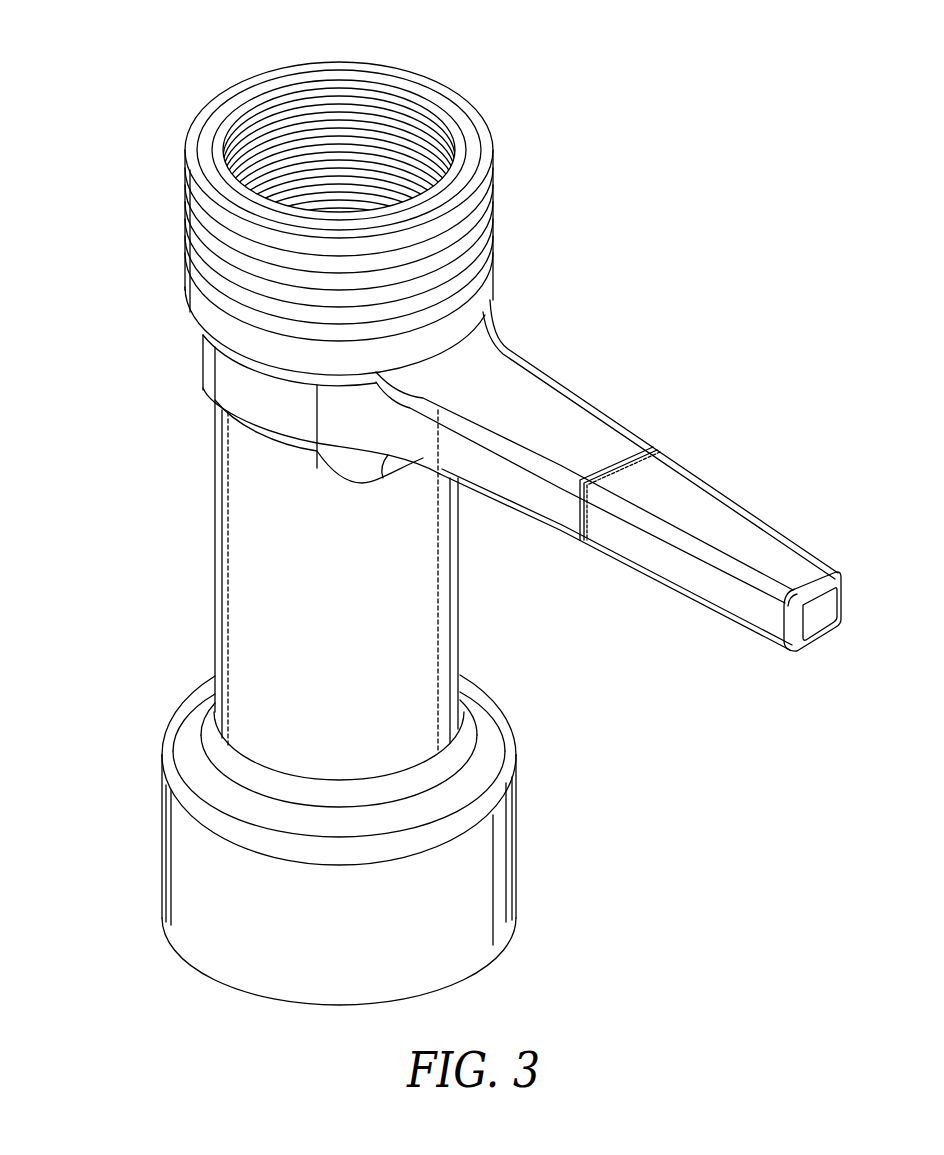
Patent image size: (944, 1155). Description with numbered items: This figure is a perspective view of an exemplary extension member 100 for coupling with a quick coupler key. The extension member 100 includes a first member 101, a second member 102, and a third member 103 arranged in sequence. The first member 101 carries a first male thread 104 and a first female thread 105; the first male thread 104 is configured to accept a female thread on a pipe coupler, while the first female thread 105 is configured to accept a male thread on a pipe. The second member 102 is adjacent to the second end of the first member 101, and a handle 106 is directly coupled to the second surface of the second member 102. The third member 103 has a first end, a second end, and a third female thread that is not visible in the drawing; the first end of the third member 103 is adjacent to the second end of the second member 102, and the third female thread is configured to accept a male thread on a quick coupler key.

The extension member 100 is at (123, 123).
The first member 101 is at (173, 217).
The second member 102 is at (197, 530).
The third member 103 is at (143, 842).
The first male thread 104 is at (490, 208).
The first female thread 105 is at (348, 113).
The handle 106 is at (573, 422).